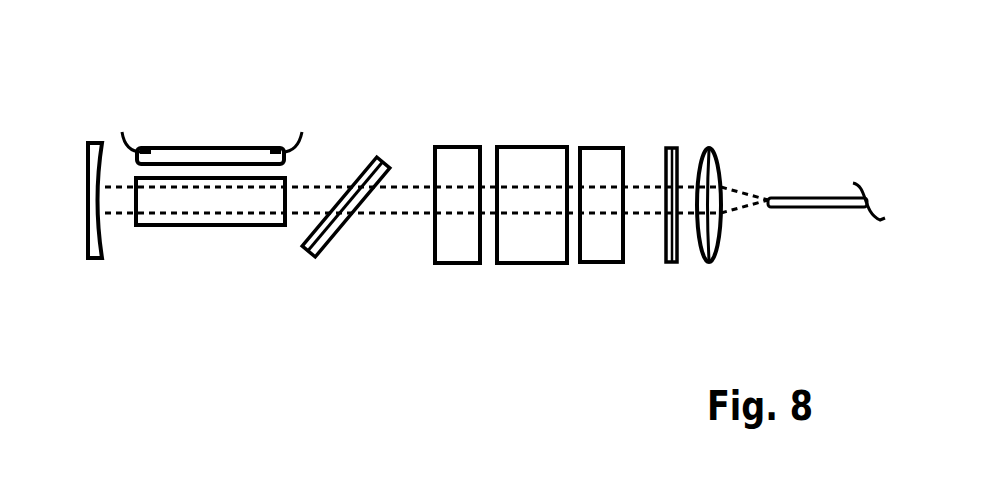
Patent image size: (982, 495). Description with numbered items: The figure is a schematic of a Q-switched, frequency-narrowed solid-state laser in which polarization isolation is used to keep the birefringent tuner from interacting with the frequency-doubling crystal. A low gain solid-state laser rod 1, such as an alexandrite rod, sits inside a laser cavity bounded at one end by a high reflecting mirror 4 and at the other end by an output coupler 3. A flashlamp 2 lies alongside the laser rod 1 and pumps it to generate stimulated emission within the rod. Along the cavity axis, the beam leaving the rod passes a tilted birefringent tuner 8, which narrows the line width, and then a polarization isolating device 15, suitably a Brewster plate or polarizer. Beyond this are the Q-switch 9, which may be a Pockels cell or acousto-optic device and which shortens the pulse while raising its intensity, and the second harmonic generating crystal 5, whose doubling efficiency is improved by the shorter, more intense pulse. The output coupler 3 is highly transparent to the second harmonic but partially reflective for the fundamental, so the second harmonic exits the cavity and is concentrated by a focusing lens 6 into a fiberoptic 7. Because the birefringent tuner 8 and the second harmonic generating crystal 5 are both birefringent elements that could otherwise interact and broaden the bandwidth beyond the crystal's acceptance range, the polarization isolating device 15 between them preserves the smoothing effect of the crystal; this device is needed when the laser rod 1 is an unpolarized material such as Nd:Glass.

The laser rod 1 is at (192, 226).
The flashlamp 2 is at (222, 148).
The output coupler 3 is at (678, 152).
The high reflecting mirror 4 is at (82, 156).
The second harmonic generating crystal 5 is at (600, 148).
The focusing lens 6 is at (712, 150).
The fiberoptic 7 is at (817, 207).
The birefringent tuner 8 is at (327, 243).
The Q-switch 9 is at (531, 263).
The polarization isolating device 15 is at (450, 147).